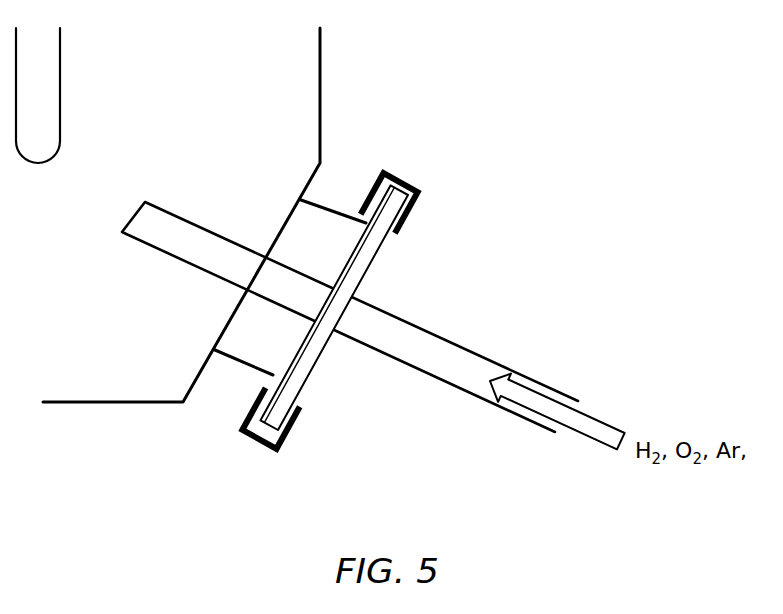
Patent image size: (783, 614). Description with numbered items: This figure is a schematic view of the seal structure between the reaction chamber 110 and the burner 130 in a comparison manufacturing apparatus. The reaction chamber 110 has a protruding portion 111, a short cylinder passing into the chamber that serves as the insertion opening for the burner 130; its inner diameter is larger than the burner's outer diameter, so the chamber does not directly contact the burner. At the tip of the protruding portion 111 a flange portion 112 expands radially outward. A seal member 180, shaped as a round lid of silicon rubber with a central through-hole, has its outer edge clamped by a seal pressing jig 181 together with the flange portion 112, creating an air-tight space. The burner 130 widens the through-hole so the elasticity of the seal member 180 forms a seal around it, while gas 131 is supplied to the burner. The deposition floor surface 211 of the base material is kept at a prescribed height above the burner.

The reaction chamber 110 is at (321, 91).
The protruding portion 111 is at (323, 207).
The flange portion 112 is at (273, 376).
The burner 130 is at (191, 223).
The gas flow 131 is at (535, 380).
The seal member 180 is at (324, 371).
The seal pressing jig 181 is at (427, 193).
The deposition floor surface 211 is at (60, 97).